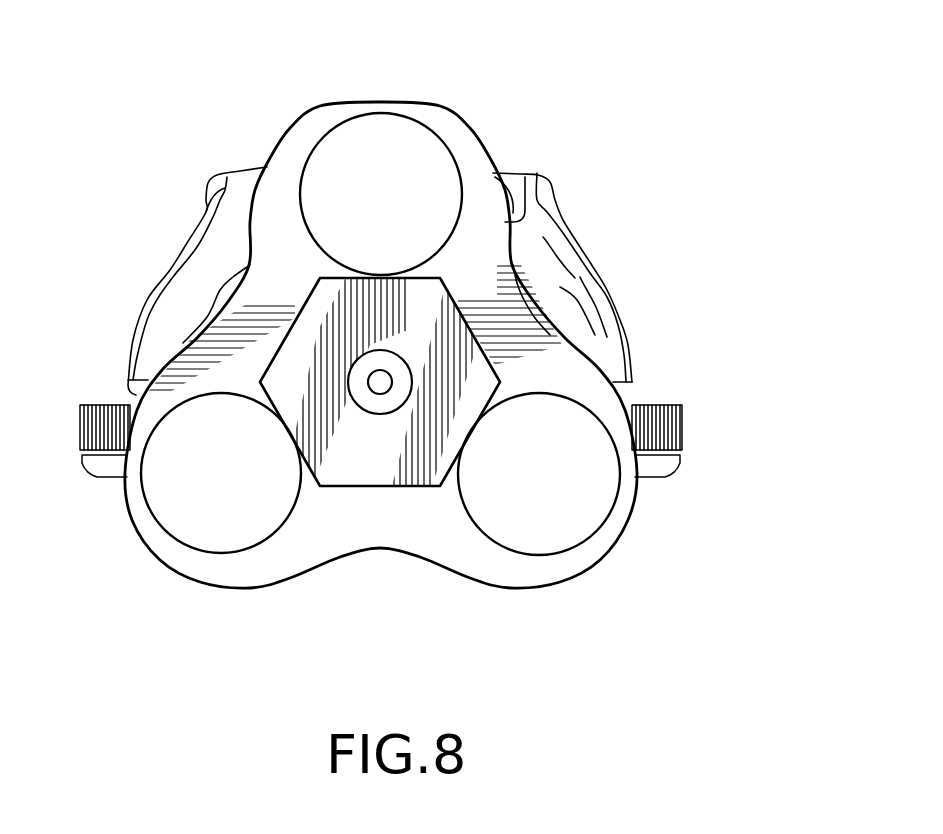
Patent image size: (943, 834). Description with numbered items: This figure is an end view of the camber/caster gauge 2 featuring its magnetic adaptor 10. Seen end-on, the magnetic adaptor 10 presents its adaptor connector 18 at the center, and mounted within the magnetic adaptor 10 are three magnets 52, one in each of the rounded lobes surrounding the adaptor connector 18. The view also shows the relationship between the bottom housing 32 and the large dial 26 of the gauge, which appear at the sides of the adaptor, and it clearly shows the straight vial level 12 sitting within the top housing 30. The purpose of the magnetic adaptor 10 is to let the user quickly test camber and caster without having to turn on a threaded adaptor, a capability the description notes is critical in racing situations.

The camber/caster gauge 2 is at (182, 112).
The magnetic adaptor 10 is at (432, 122).
The straight vial level 12 is at (513, 215).
The adaptor connector 18 is at (372, 403).
The large dial 26 is at (684, 427).
The top housing 30 is at (610, 280).
The bottom housing 32 is at (662, 480).
The magnets 52 is at (357, 172).